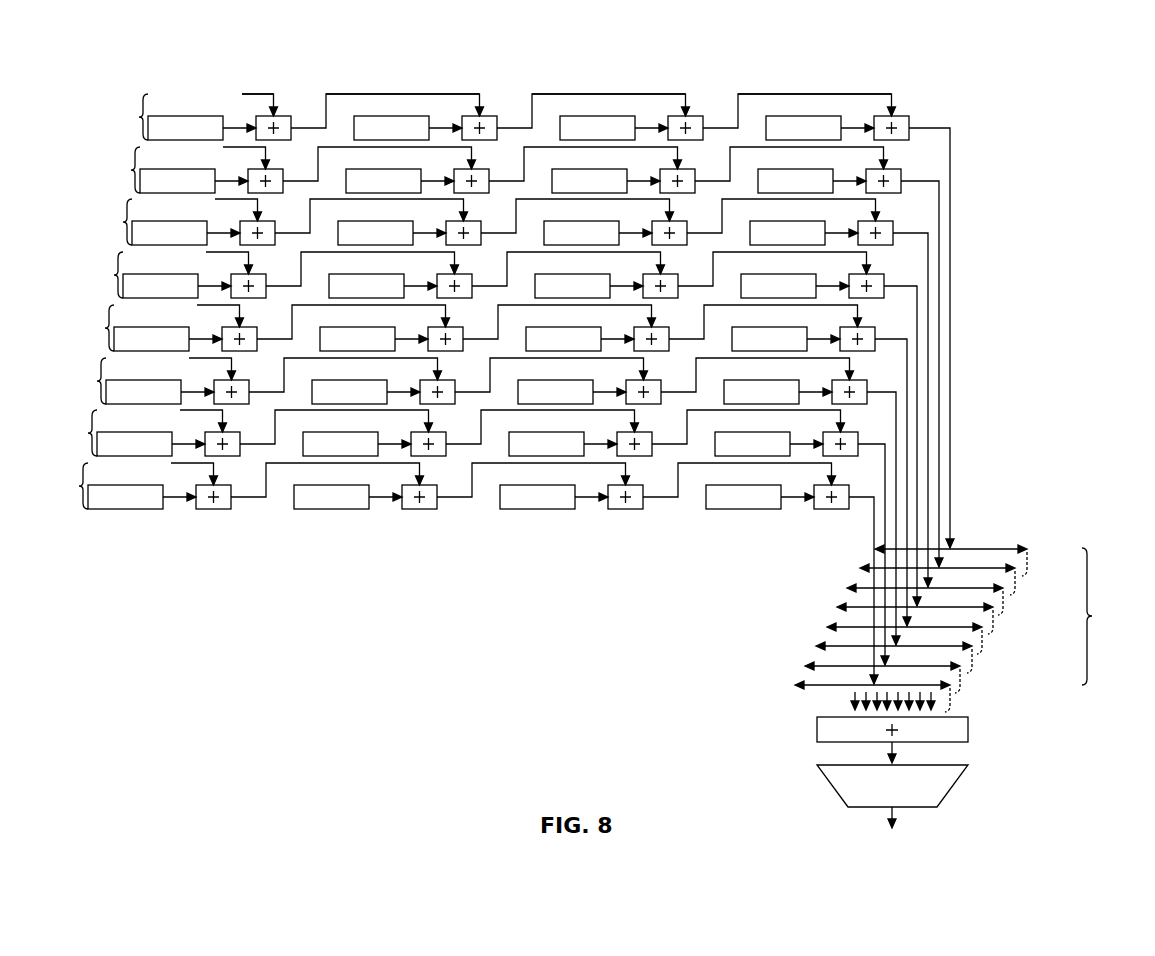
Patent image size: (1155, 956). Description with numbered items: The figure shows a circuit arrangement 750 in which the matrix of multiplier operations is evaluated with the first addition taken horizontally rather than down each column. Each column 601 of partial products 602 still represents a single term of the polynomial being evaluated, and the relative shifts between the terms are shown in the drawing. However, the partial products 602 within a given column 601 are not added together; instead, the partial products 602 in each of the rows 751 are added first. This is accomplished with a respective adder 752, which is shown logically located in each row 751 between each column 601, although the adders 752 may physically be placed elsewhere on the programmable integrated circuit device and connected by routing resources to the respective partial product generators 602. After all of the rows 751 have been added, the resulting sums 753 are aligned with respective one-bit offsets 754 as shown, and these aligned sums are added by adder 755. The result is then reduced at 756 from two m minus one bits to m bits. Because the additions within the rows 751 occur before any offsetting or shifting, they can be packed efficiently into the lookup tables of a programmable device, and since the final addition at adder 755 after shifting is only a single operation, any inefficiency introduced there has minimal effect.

The circuit arrangement 750 is at (124, 68).
The row 751 is at (93, 301).
The adder 752 is at (277, 168).
The resulting sums 753 is at (964, 617).
The 1-bit offset 754 is at (1022, 576).
The adder 755 is at (817, 728).
The reduction 756 is at (950, 788).
The column 601 is at (203, 92).
The partial product generator 602 is at (613, 167).